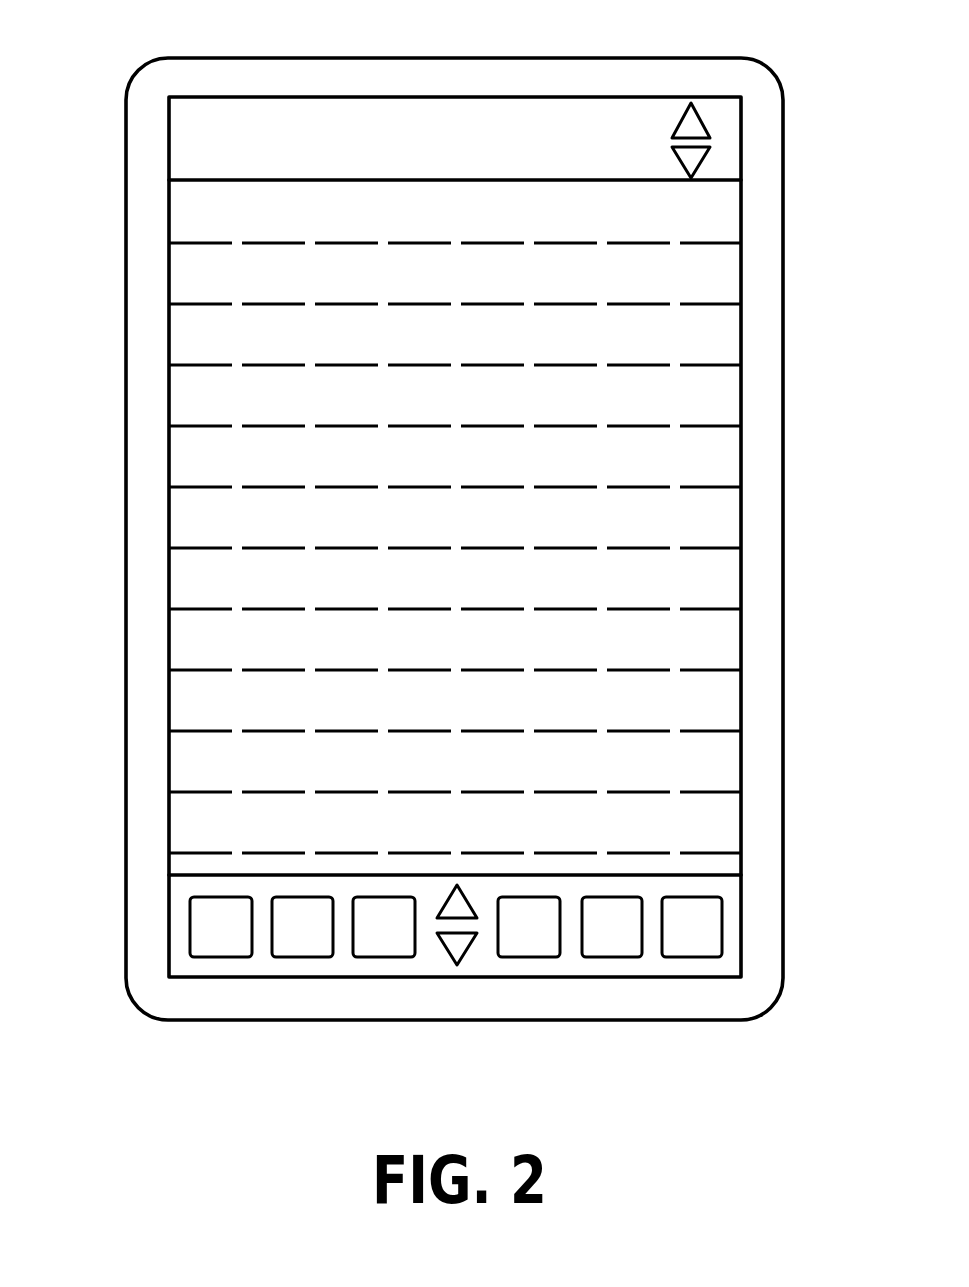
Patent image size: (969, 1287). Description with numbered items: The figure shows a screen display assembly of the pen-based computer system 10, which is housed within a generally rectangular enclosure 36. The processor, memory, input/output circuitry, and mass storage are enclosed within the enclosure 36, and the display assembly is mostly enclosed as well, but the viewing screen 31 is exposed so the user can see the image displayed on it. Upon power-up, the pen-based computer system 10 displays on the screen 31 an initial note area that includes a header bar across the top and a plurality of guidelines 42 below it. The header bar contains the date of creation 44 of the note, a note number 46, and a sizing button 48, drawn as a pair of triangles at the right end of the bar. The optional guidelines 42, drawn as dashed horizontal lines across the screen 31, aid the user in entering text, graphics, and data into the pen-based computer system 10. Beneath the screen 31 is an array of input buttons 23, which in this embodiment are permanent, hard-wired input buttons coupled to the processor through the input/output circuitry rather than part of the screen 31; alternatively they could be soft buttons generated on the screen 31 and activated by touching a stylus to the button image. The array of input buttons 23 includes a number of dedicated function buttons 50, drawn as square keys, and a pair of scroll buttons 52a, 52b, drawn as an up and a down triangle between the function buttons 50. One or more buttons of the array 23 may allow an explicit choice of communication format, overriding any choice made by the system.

The pen-based computer system 10 is at (830, 310).
The enclosure 36 is at (767, 408).
The viewing screen 31 is at (715, 535).
The date of creation 44 is at (305, 117).
The note number 46 is at (580, 117).
The sizing button 48 is at (717, 142).
The guidelines 42 is at (187, 673).
The array of input buttons 23 is at (517, 947).
The dedicated function buttons 50 is at (373, 945).
The scroll button 52a is at (462, 893).
The scroll button 52b is at (458, 957).